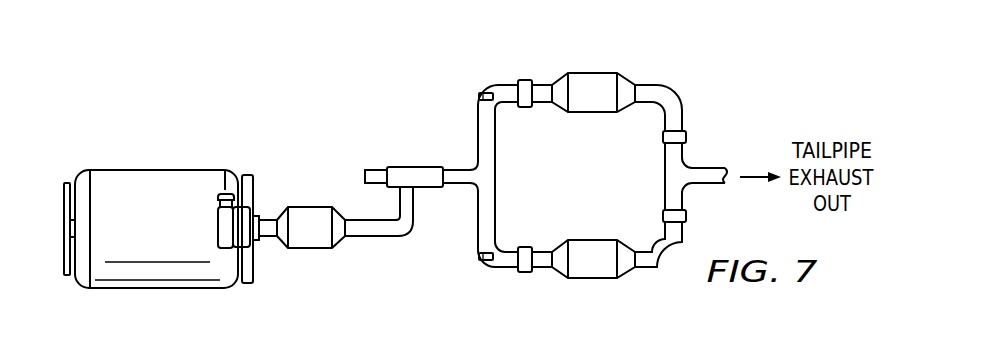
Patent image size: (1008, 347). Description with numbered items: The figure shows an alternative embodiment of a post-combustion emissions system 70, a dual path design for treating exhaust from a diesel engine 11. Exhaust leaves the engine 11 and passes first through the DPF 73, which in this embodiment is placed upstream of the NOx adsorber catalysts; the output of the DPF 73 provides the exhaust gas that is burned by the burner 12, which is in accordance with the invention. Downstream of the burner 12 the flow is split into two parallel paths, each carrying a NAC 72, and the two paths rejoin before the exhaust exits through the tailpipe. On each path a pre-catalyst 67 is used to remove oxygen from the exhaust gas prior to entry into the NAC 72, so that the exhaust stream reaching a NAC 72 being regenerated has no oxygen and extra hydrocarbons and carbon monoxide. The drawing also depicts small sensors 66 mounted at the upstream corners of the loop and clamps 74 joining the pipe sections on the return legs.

The diesel engine 11 is at (136, 170).
The burner 12 is at (408, 165).
The DPF 73 is at (308, 250).
The emissions system 70 is at (410, 87).
The sensor 66 is at (481, 94).
The pre-catalyst 67 is at (522, 80).
The NAC 72 is at (597, 72).
The clamp 74 is at (662, 137).